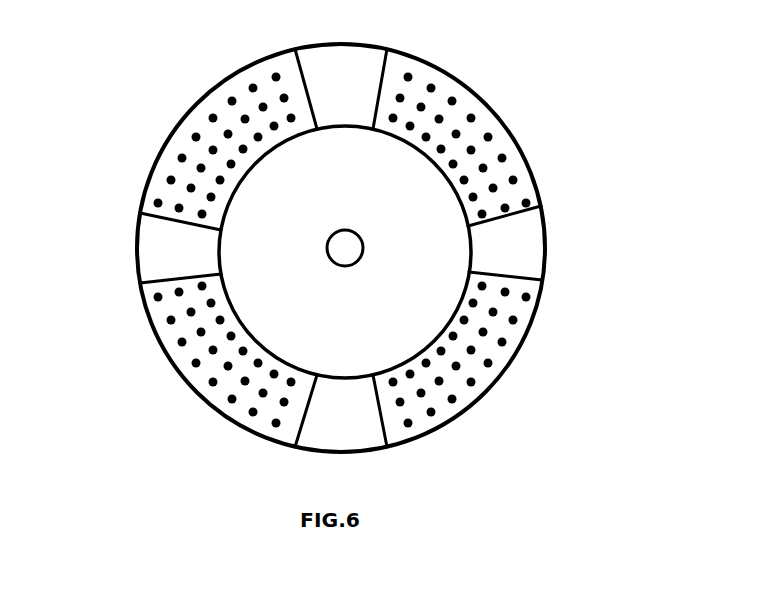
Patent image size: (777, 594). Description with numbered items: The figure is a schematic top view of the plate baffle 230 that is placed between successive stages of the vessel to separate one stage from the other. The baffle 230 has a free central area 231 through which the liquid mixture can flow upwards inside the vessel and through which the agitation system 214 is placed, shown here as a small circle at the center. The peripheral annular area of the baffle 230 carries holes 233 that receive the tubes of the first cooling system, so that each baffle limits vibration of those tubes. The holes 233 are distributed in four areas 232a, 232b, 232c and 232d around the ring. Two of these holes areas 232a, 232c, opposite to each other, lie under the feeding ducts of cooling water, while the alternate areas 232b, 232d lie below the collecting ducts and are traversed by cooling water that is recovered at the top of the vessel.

The agitation system 214 is at (351, 232).
The plate baffle 230 is at (532, 91).
The free central area 231 is at (452, 244).
The holes area 232a is at (507, 355).
The holes area 232b is at (538, 152).
The holes area 232c is at (168, 128).
The holes area 232d is at (148, 322).
The holes 233 is at (512, 290).